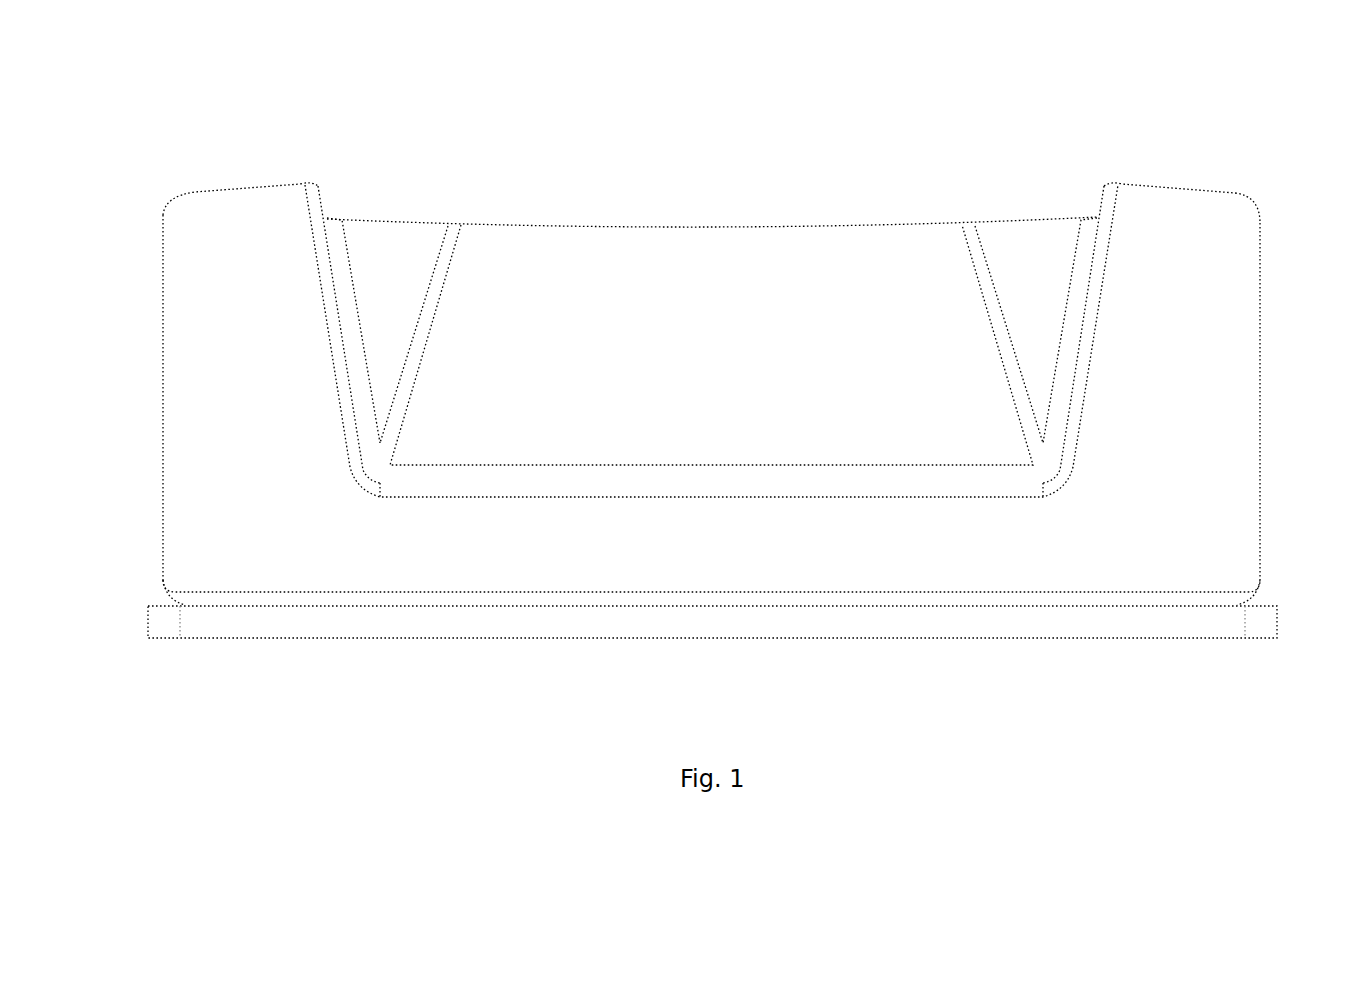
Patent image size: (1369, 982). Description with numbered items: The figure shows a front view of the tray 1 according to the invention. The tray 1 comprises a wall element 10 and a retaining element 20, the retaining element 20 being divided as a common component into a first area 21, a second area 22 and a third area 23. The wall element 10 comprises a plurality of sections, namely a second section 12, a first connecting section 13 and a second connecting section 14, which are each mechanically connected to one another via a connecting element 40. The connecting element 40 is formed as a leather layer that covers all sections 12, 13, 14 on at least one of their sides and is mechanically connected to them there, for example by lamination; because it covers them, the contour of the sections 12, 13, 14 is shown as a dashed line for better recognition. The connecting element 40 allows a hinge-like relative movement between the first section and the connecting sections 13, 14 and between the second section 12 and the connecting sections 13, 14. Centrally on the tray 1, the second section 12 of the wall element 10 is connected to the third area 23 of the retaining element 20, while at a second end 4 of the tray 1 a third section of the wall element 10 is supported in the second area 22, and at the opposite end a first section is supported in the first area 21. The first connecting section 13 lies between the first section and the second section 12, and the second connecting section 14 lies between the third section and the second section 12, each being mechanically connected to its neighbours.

The tray 1 is at (698, 394).
The second end 4 is at (293, 287).
The wall element 10 is at (712, 153).
The second section 12 is at (711, 288).
The first connecting section 13 is at (1060, 301).
The second connecting section 14 is at (377, 282).
The retaining element 20 is at (760, 394).
The first area 21 is at (1296, 401).
The second area 22 is at (141, 397).
The third area 23 is at (712, 631).
The connecting element 40 is at (711, 276).